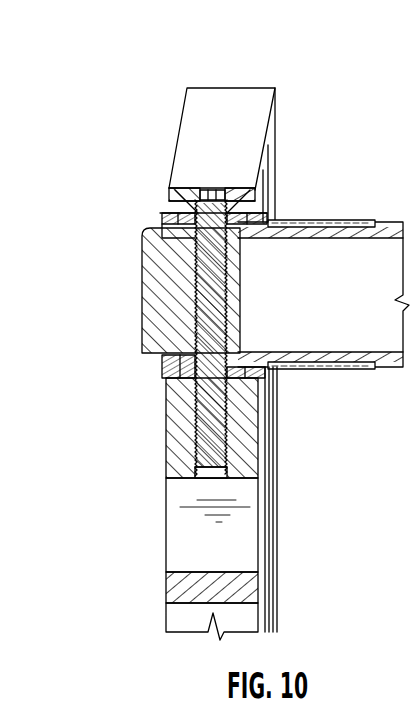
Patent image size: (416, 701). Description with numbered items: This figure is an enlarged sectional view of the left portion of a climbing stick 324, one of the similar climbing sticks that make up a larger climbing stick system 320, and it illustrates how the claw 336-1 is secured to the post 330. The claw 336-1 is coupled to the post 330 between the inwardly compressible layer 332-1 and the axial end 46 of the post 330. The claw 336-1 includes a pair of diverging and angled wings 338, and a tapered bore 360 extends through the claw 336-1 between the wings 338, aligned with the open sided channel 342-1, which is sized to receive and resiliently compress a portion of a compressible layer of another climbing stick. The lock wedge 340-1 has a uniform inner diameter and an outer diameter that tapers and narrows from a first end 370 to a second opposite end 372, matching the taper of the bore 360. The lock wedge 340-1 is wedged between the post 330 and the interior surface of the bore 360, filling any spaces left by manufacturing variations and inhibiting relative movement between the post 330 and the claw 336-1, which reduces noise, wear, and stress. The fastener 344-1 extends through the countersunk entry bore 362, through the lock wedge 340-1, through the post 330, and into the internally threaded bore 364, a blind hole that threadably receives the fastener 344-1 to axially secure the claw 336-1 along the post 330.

The climbing stick system 320 is at (88, 86).
The climbing stick 324 is at (158, 134).
The claw 336-1 is at (254, 88).
The fastener 344-1 is at (244, 192).
The entry bore 362 is at (170, 203).
The axial end of post 46 is at (123, 266).
The angled wings 338 is at (142, 305).
The second end of lock wedge 372 is at (160, 373).
The tapered bore 360 is at (170, 405).
The lock wedge 340-1 is at (239, 361).
The first end of lock wedge 370 is at (283, 367).
The inwardly compressible layer 332-1 is at (330, 370).
The post 330 is at (381, 370).
The internally threaded bore 364 is at (230, 432).
The open sided channel 342-1 is at (196, 542).